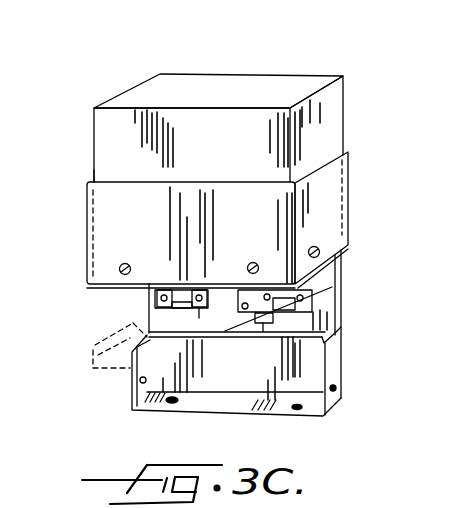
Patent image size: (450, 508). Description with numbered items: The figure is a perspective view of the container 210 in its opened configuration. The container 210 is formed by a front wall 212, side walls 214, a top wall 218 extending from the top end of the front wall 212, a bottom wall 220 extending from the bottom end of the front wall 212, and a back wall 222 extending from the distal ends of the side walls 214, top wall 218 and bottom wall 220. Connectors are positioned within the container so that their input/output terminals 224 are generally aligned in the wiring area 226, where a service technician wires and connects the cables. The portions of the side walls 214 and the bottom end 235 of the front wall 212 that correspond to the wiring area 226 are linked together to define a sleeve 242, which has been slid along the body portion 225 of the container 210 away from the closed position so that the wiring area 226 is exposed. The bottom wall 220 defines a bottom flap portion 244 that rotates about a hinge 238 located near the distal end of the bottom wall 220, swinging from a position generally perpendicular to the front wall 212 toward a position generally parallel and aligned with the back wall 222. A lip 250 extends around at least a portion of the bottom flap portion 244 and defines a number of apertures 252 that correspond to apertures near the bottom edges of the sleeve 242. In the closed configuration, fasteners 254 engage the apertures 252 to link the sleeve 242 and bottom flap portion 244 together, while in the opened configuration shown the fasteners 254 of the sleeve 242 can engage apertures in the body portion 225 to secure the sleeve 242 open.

The container 210 is at (104, 82).
The front wall 212 is at (103, 132).
The side wall 214 is at (335, 107).
The top wall 218 is at (205, 84).
The bottom wall 220 is at (275, 413).
The back wall 222 is at (330, 303).
The input/output terminals 224 is at (214, 310).
The body portion 225 is at (112, 162).
The wiring area 226 is at (138, 305).
The bottom end 235 is at (107, 210).
The hinge 238 is at (343, 315).
The sleeve 242 is at (105, 241).
The bottom flap portion 244 is at (213, 383).
The lip 250 is at (128, 383).
The apertures 252 is at (305, 407).
The fasteners 254 is at (131, 264).